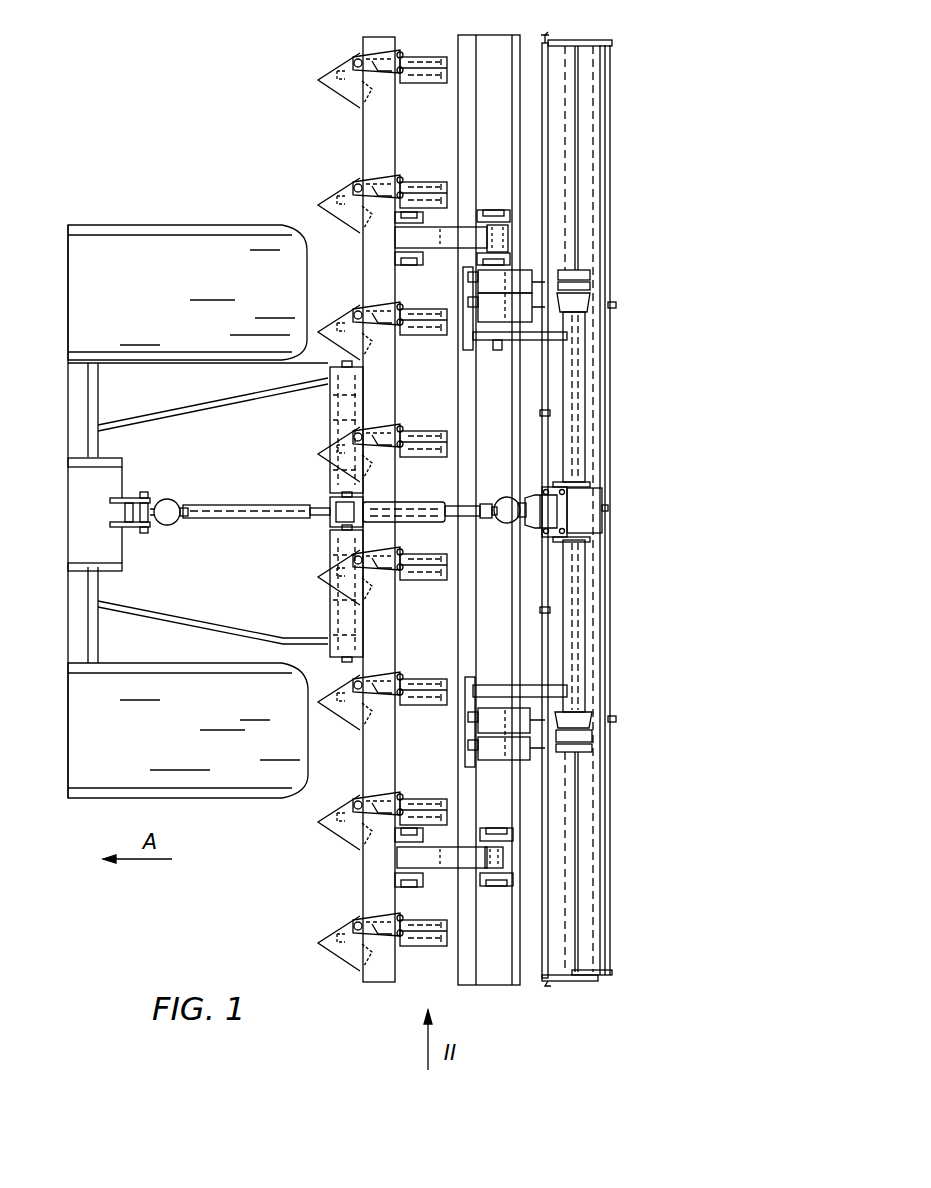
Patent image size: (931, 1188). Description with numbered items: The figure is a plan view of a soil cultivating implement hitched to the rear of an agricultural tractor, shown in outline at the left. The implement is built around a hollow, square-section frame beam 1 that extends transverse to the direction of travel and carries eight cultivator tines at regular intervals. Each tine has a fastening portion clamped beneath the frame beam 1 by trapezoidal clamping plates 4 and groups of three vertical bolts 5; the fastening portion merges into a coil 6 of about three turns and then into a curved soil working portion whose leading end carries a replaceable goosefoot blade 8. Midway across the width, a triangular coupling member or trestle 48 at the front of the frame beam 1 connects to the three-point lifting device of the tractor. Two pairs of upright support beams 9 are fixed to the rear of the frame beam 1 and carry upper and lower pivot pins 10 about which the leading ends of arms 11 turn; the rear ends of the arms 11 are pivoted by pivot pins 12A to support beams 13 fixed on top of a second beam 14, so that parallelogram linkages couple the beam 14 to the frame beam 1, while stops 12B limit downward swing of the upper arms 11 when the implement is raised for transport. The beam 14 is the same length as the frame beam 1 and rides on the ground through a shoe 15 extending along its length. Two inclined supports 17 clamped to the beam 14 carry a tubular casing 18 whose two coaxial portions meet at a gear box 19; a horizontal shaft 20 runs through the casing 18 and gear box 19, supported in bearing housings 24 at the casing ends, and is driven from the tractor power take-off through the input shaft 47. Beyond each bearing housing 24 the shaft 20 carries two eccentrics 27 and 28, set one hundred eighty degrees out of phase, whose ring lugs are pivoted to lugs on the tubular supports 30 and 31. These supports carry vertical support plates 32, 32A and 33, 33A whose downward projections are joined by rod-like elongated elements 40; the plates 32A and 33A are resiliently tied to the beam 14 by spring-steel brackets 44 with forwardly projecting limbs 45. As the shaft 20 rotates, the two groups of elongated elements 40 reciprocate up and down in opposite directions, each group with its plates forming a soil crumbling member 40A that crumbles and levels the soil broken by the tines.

The frame beam 1 is at (368, 112).
The clamping plates 4 is at (372, 38).
The bolts 5 is at (355, 62).
The coil 6 is at (427, 57).
The blade 8 is at (330, 80).
The support beams 9 is at (392, 230).
The pivot pins 10 is at (395, 262).
The arms 11 is at (447, 250).
The pivot pins 12A is at (497, 210).
The stops 12B is at (455, 222).
The support beams 13 is at (470, 212).
The beam 14 is at (495, 985).
The shoe 15 is at (454, 395).
The supports 17 is at (500, 341).
The tubular casing 18 is at (585, 405).
The gear box 19 is at (602, 497).
The shaft 20 is at (580, 373).
The bearing housings 24 is at (600, 298).
The eccentric 27 is at (592, 286).
The eccentric 28 is at (592, 273).
The tubular support 30 is at (600, 893).
The tubular support 31 is at (557, 447).
The support plates 32 is at (600, 42).
The support plates 32A is at (616, 305).
The support plates 33 is at (546, 40).
The support plates 33A is at (588, 250).
The elongated elements 40 is at (610, 150).
The soil crumbling member 40A is at (614, 645).
The resilient brackets 44 is at (535, 268).
The limbs 45 is at (500, 283).
The input shaft 47 is at (522, 523).
The coupling member or trestle 48 is at (330, 410).